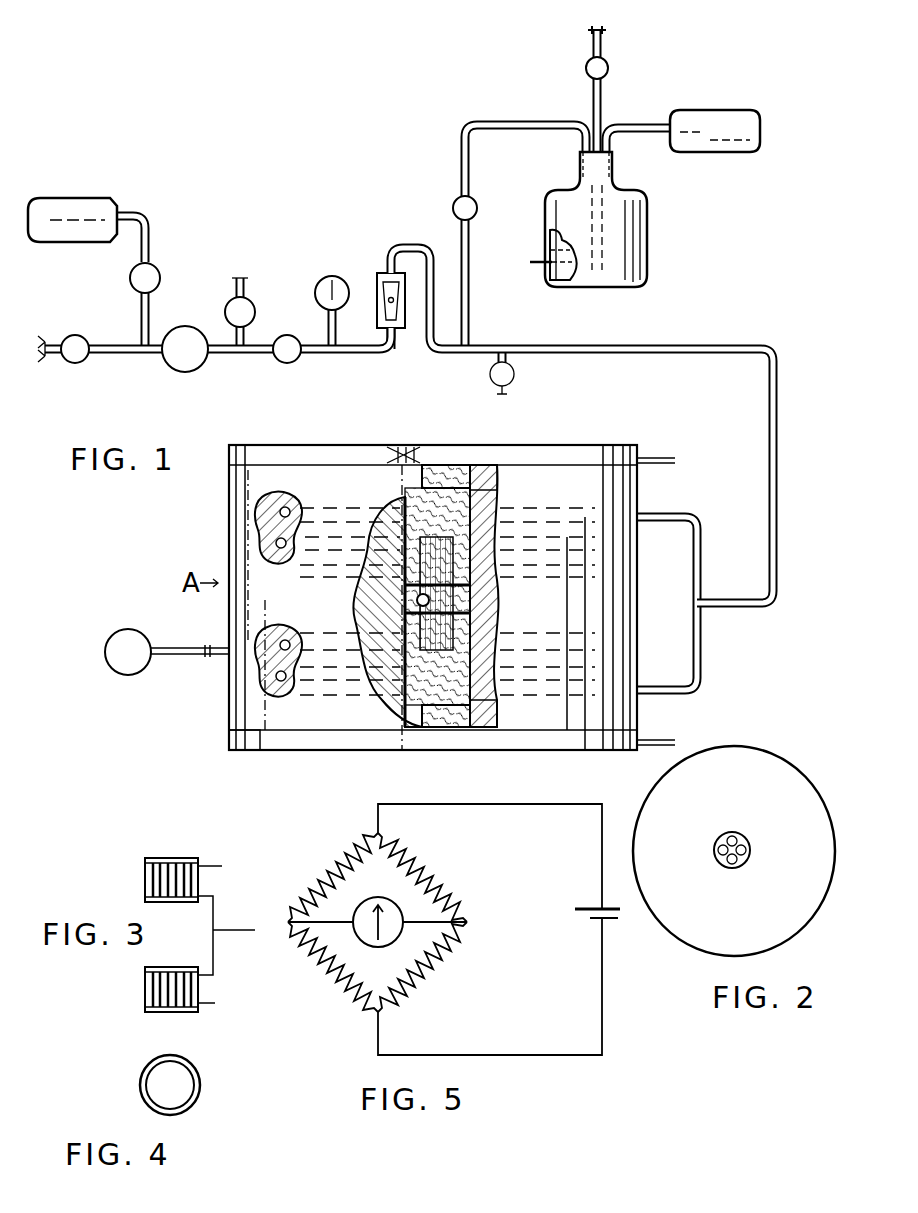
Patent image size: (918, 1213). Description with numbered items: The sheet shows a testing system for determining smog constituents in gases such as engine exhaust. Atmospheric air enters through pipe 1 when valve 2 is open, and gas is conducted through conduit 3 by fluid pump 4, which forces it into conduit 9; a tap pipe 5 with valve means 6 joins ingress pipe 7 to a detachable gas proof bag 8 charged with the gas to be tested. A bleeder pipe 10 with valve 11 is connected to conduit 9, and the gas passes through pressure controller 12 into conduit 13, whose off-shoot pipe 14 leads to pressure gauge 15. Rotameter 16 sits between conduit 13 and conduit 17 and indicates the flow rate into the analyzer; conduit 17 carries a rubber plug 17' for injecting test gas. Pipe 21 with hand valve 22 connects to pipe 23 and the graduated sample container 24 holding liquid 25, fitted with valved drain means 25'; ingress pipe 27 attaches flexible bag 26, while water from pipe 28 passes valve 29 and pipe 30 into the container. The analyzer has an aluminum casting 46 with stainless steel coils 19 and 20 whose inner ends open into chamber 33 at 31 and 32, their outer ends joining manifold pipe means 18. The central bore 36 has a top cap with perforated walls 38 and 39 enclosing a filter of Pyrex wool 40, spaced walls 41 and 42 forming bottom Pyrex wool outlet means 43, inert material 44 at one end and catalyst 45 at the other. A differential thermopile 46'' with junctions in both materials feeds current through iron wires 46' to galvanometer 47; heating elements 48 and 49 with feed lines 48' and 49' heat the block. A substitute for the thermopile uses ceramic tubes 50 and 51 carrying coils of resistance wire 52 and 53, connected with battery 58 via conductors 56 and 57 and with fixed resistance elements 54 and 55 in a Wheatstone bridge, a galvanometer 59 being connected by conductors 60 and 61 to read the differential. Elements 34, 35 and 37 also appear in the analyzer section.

In FIG. 1, the pipe 1 is at (40, 362).
In FIG. 1, the valve 2 is at (72, 366).
In FIG. 1, the conduit 3 is at (110, 368).
In FIG. 1, the fluid pump 4 is at (185, 372).
In FIG. 1, the pipe 5 is at (140, 322).
In FIG. 1, the valve means 6 is at (160, 276).
In FIG. 1, the ingress pipe 7 is at (150, 230).
In FIG. 1, the gas proof bag 8 is at (72, 220).
In FIG. 1, the conduit 9 is at (236, 366).
In FIG. 1, the bleeder pipe 10 is at (246, 326).
In FIG. 1, the valve 11 is at (254, 307).
In FIG. 1, the pressure controller 12 is at (284, 364).
In FIG. 1, the conduit 13 is at (340, 366).
In FIG. 1, the off-shoot pipe 14 is at (328, 322).
In FIG. 1, the pressure gauge 15 is at (328, 268).
In FIG. 1, the rotameter 16 is at (377, 318).
In FIG. 1, the conduit 17 is at (604, 416).
In FIG. 1, the rubber plug 17' is at (533, 371).
In FIG. 1, the manifold pipe means 18 is at (702, 640).
In FIG. 1, the stainless steel coil 19 is at (292, 500).
In FIG. 1, the stainless steel coil 20 is at (283, 688).
In FIG. 1, the pipe 21 is at (470, 288).
In FIG. 1, the hand valve 22 is at (478, 208).
In FIG. 1, the pipe 23 is at (463, 162).
In FIG. 1, the sample container 24 is at (612, 292).
In FIG. 1, the liquid 25 is at (560, 278).
In FIG. 1, the valved drain means 25' is at (526, 247).
In FIG. 1, the flexible bag 26 is at (715, 131).
In FIG. 1, the ingress pipe 27 is at (626, 134).
In FIG. 1, the pipe 28 is at (606, 30).
In FIG. 1, the valve 29 is at (586, 68).
In FIG. 1, the pipe 30 is at (603, 100).
In FIG. 1, the coil inner end opening 31 is at (372, 588).
In FIG. 1, the coil inner end opening 32 is at (380, 622).
In FIG. 1, the chamber 33 is at (445, 600).
In FIG. 1, the specimen 34 is at (458, 585).
In FIG. 1, the clamp bar 35 is at (458, 612).
In FIG. 1, the central bore 36 is at (483, 510).
In FIG. 1, the lead 37 is at (470, 640).
In FIG. 1, the perforated wall 38 is at (437, 465).
In FIG. 1, the perforated wall 39 is at (445, 470).
In FIG. 1, the filter of Pyrex wool 40 is at (480, 465).
In FIG. 1, the spaced wall 41 is at (420, 716).
In FIG. 1, the spaced wall 42 is at (470, 730).
In FIG. 2, the spaced wall 42 is at (752, 854).
In FIG. 1, the bottom Pyrex wool outlet means 43 is at (450, 730).
In FIG. 1, the inert material 44 is at (495, 495).
In FIG. 1, the catalyst 45 is at (495, 700).
In FIG. 1, the aluminum casting 46 is at (327, 501).
In FIG. 1, the iron wires 46' is at (190, 670).
In FIG. 1, the differential thermopile 46'' is at (387, 612).
In FIG. 1, the galvanometer 47 is at (124, 630).
In FIG. 1, the heating element 48 is at (466, 580).
In FIG. 2, the heating element 48 is at (734, 843).
In FIG. 1, the electrical feed lines 48' is at (688, 445).
In FIG. 1, the heating element 49 is at (216, 750).
In FIG. 1, the feed lines 49' is at (683, 724).
In FIG. 3, the tube 50 is at (145, 860).
In FIG. 3, the tube 51 is at (145, 1010).
In FIG. 4, the tube 51 is at (194, 1095).
In FIG. 3, the coil of resistance wire 52 is at (188, 858).
In FIG. 5, the coil of resistance wire 52 is at (338, 860).
In FIG. 3, the coil of resistance wire 53 is at (172, 1012).
In FIG. 5, the coil of resistance wire 53 is at (338, 982).
In FIG. 5, the fixed resistance element 54 is at (430, 875).
In FIG. 5, the fixed resistance element 55 is at (432, 972).
In FIG. 3, the conductor 56 is at (222, 866).
In FIG. 5, the conductor 56 is at (500, 806).
In FIG. 3, the conductor 57 is at (212, 1004).
In FIG. 5, the conductor 57 is at (482, 1052).
In FIG. 5, the electric battery 58 is at (594, 918).
In FIG. 5, the galvanometer 59 is at (386, 944).
In FIG. 3, the conductor 60 is at (228, 930).
In FIG. 5, the conductor 60 is at (352, 920).
In FIG. 5, the conductor 61 is at (436, 922).